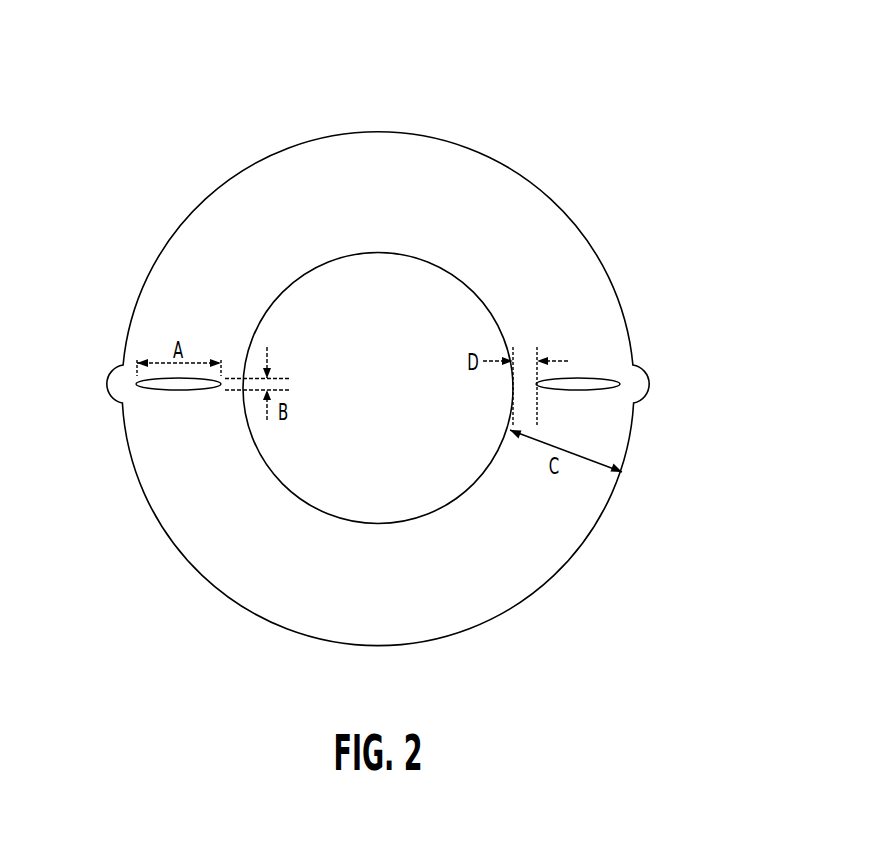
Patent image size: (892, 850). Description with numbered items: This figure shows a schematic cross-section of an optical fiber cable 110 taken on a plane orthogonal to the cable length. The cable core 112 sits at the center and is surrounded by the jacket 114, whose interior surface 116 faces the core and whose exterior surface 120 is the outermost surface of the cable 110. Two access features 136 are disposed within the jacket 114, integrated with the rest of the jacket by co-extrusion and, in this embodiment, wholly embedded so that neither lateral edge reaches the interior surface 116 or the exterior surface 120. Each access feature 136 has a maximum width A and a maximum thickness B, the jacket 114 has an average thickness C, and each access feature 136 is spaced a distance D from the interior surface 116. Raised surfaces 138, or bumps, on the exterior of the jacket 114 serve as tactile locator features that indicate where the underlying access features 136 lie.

The optical fiber cable 110 is at (196, 150).
The cable core 112 is at (363, 394).
The jacket 114 is at (438, 187).
The interior surface 116 is at (452, 502).
The exterior surface 120 is at (575, 220).
The access features 136 is at (170, 390).
The raised surfaces 138 is at (102, 380).